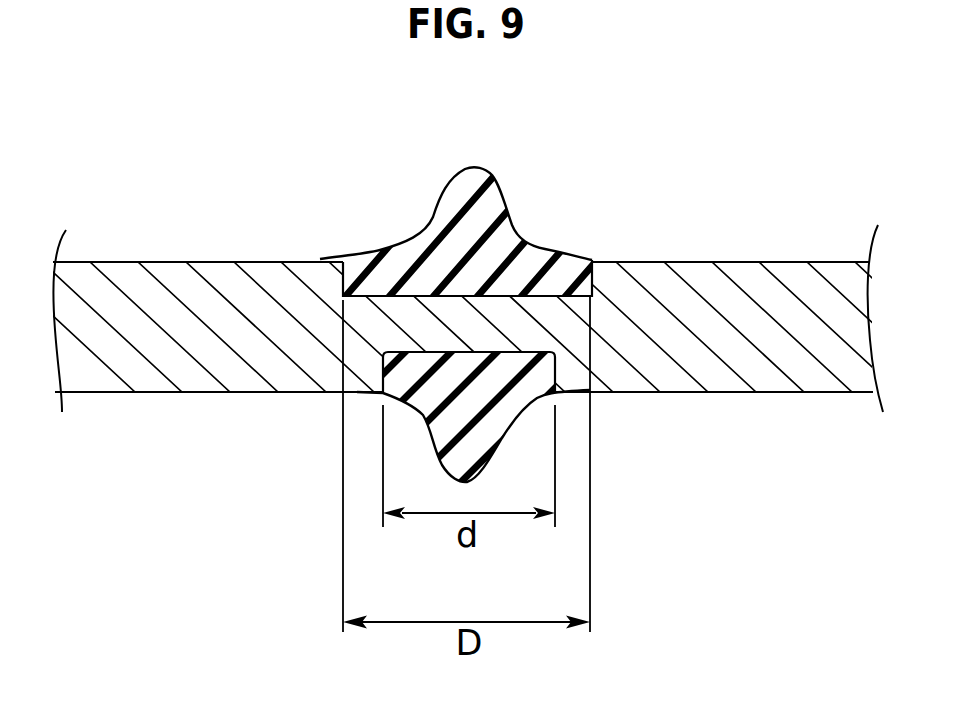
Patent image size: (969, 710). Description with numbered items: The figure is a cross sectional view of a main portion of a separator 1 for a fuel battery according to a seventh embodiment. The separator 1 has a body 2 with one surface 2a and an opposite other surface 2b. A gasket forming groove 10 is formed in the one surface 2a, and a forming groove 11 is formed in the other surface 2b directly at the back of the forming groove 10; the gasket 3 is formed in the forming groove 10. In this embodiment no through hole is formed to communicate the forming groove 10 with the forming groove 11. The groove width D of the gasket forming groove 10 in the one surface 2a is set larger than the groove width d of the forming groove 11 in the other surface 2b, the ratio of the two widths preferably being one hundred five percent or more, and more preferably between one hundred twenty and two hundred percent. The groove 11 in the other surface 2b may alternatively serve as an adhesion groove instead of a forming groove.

The separator 1 is at (768, 256).
The separator body 2 is at (830, 307).
The one surface 2a is at (180, 262).
The other surface 2b is at (163, 392).
The gasket 3 is at (483, 215).
The forming groove 10 is at (578, 283).
The forming groove 11 is at (555, 378).